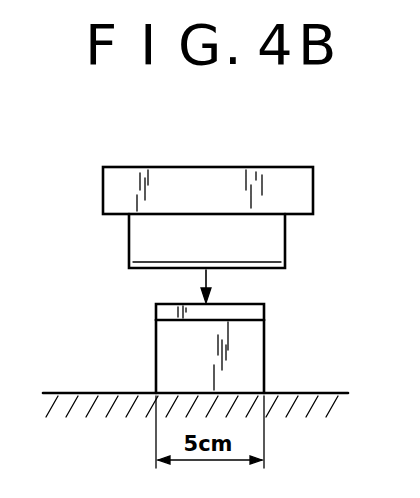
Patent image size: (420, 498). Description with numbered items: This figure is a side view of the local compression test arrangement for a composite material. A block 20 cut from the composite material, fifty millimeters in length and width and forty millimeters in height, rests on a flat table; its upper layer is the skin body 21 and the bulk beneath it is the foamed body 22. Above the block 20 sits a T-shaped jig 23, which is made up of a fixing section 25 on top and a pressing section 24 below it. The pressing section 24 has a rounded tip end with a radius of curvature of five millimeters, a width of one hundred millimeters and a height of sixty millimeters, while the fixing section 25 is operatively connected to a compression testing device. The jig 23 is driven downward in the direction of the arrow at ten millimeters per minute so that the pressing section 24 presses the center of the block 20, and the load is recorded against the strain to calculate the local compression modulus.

The block 20 is at (217, 336).
The skin body 21 is at (157, 312).
The foamed body 22 is at (157, 358).
The T-shaped jig 23 is at (204, 201).
The pressing section 24 is at (277, 238).
The fixing section 25 is at (303, 188).